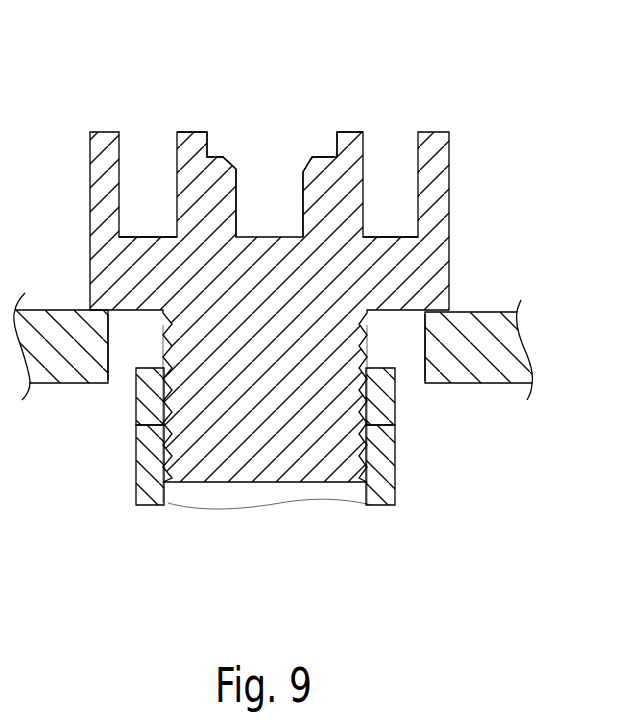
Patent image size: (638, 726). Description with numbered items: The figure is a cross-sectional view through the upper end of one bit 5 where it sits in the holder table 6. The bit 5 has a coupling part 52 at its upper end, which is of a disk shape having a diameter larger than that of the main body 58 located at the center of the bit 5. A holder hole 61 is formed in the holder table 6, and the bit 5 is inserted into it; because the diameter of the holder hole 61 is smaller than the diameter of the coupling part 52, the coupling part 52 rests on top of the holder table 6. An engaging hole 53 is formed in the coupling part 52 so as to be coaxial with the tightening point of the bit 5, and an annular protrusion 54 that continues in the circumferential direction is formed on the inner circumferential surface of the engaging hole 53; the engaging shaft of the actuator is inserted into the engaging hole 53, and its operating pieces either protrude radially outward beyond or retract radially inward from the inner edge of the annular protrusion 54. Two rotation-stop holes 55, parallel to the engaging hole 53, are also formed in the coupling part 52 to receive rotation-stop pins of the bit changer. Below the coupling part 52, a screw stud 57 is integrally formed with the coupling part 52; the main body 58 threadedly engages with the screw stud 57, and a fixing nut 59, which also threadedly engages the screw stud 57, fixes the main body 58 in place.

The bit 5 is at (336, 246).
The coupling part 52 is at (407, 272).
The engaging hole 53 is at (303, 217).
The annular protrusion 54 is at (233, 192).
The rotation-stop hole 55 is at (123, 170).
The screw stud 57 is at (268, 443).
The main body 58 is at (138, 460).
The fixing nut 59 is at (138, 403).
The holder table 6 is at (480, 370).
The holder hole 61 is at (425, 368).